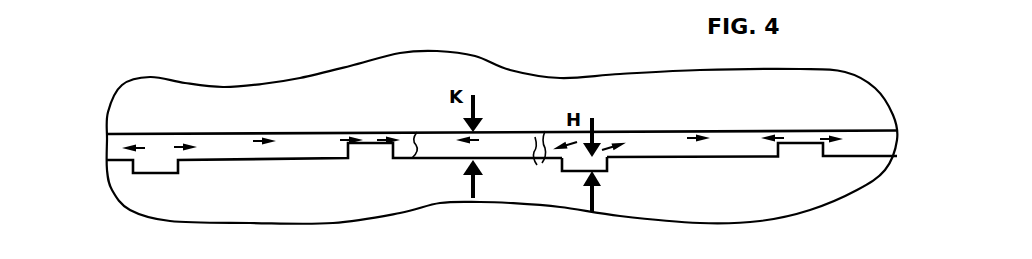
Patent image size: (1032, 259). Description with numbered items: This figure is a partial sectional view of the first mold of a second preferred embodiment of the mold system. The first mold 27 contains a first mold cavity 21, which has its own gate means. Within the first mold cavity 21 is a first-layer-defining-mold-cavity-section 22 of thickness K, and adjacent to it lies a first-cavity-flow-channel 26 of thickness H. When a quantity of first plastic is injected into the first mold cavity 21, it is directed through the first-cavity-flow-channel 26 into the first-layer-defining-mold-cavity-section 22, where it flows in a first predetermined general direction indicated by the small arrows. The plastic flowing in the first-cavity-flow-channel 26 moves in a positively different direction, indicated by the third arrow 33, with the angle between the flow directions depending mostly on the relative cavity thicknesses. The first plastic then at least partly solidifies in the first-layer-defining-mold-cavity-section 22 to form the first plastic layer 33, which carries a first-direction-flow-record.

The first mold cavity 21 is at (562, 158).
The first-layer-defining-mold-cavity-section 22 is at (428, 140).
The first-cavity-flow-channel 26 is at (583, 171).
The first mold 27 is at (117, 111).
The first plastic layer 33 is at (507, 140).